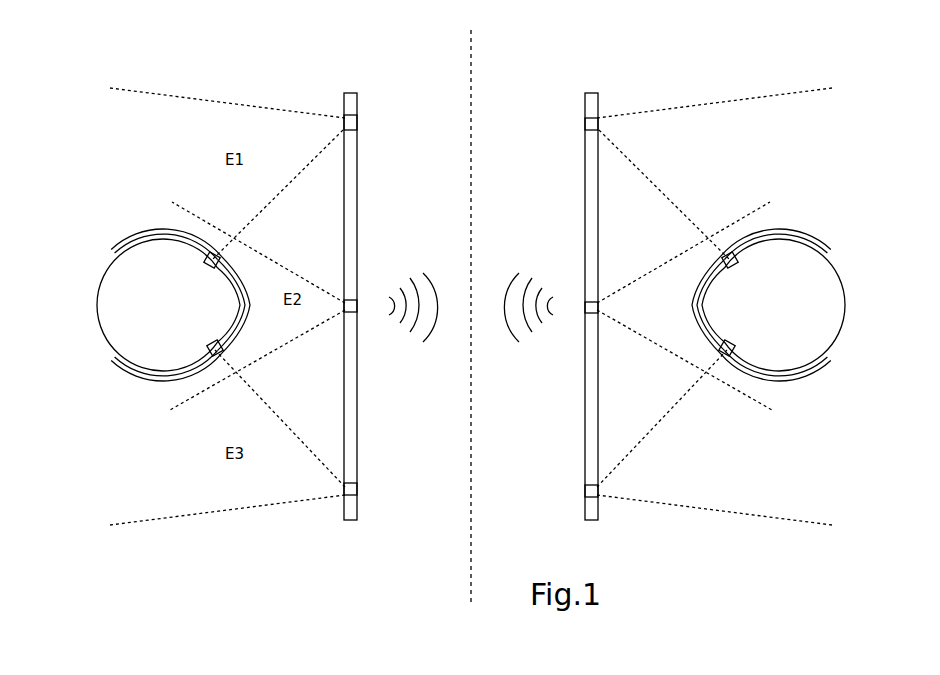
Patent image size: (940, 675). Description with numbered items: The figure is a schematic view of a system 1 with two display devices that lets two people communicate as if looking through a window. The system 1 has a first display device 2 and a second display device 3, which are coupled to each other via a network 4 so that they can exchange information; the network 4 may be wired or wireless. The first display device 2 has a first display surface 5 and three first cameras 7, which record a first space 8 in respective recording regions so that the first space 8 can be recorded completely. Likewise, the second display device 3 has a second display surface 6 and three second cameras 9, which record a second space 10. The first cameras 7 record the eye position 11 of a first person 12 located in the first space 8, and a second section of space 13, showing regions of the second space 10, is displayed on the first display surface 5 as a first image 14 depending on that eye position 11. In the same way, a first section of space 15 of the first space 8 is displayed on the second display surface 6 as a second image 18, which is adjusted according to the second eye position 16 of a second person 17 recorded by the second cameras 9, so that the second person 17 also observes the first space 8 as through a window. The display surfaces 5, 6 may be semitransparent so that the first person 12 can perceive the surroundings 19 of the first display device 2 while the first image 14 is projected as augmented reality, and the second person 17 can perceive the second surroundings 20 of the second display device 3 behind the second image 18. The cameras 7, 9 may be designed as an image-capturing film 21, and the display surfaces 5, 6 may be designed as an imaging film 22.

The system 1 is at (347, 552).
The first display device 2 is at (362, 91).
The second display device 3 is at (577, 91).
The network 4 is at (420, 360).
The first display surface 5 is at (359, 157).
The second display surface 6 is at (584, 157).
The first camera 7 is at (358, 124).
The first space 8 is at (100, 152).
The second camera 9 is at (585, 125).
The second space 10 is at (833, 156).
The eye position 11 is at (212, 266).
The first person 12 is at (96, 330).
The second section of space 13 is at (833, 446).
The first image 14 is at (328, 183).
The first section of space 15 is at (101, 446).
The second eye position 16 is at (730, 266).
The second person 17 is at (846, 330).
The second image 18 is at (614, 183).
The surroundings 19 is at (429, 205).
The second surroundings 20 is at (512, 207).
The image-capturing film 21 is at (356, 210).
The imaging film 22 is at (368, 245).